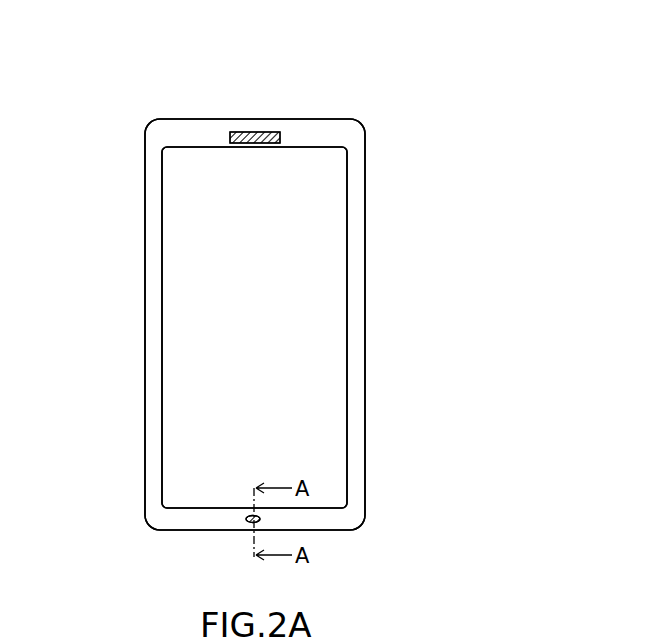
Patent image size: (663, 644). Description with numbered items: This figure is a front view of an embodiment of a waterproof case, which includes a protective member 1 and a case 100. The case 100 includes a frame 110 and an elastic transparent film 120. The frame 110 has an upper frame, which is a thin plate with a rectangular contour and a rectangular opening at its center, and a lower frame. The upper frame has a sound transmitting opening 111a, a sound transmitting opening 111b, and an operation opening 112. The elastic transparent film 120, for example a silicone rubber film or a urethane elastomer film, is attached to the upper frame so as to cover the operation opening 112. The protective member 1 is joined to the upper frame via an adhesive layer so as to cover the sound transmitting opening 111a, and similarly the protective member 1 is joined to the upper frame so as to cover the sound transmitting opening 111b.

The case 100 is at (368, 75).
The frame 110 is at (357, 251).
The operation opening 112 is at (346, 345).
The elastic transparent film 120 is at (195, 328).
The sound transmitting opening 111a is at (267, 132).
The sound transmitting opening 111b is at (249, 525).
The protective member 1 is at (246, 132).